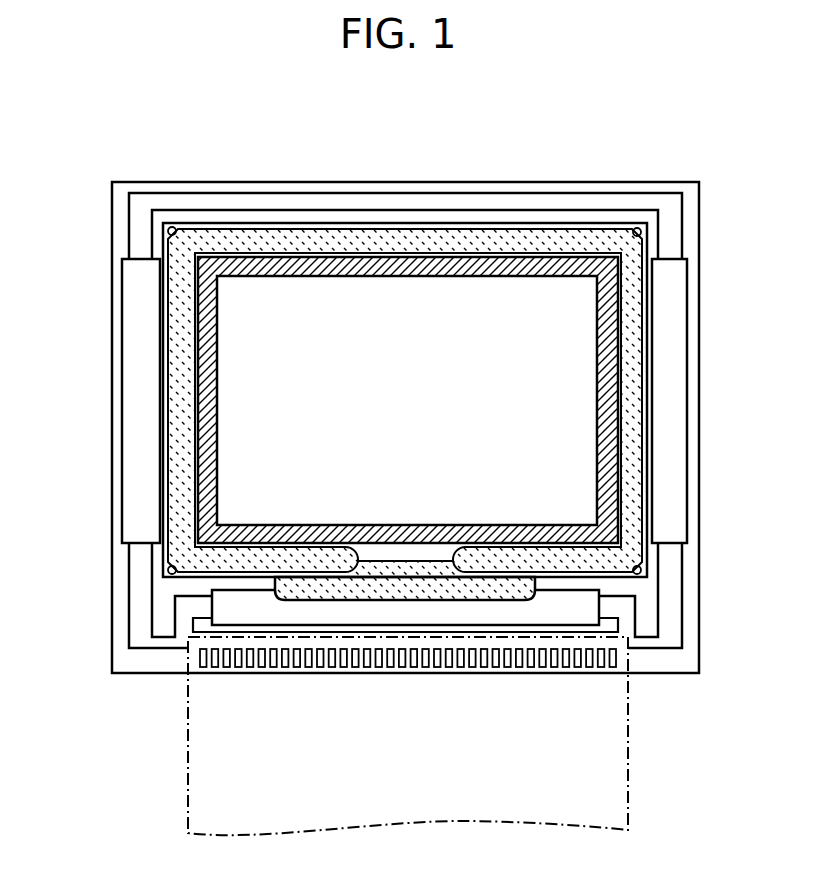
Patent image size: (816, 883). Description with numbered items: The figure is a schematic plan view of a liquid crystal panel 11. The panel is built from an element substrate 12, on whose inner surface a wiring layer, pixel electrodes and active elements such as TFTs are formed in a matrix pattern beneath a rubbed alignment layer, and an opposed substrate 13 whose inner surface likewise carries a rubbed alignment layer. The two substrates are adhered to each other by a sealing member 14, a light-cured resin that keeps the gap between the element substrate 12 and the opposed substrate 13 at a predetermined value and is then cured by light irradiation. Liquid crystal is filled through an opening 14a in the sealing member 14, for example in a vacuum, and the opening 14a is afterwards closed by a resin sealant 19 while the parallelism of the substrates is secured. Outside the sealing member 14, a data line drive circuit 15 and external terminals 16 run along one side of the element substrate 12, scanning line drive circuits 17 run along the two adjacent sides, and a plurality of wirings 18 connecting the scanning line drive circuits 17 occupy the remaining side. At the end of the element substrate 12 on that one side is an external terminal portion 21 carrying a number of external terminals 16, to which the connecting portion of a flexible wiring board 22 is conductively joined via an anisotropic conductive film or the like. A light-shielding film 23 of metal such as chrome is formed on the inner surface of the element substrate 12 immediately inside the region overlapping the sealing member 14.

The liquid crystal panel 11 is at (604, 96).
The element substrate 12 is at (171, 187).
The opposed substrate 13 is at (457, 227).
The sealing member 14 is at (258, 230).
The opening 14a is at (368, 562).
The data line drive circuit 15 is at (245, 618).
The external terminals 16 is at (328, 650).
The scanning line drive circuits 17 is at (132, 418).
The wirings 18 is at (627, 200).
The sealant 19 is at (410, 570).
The external terminal portion 21 is at (435, 658).
The flexible wiring board 22 is at (628, 714).
The light-shielding film 23 is at (213, 390).